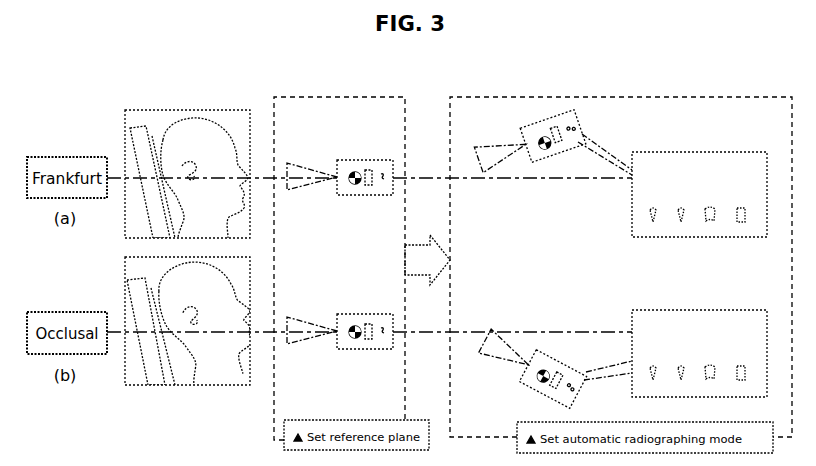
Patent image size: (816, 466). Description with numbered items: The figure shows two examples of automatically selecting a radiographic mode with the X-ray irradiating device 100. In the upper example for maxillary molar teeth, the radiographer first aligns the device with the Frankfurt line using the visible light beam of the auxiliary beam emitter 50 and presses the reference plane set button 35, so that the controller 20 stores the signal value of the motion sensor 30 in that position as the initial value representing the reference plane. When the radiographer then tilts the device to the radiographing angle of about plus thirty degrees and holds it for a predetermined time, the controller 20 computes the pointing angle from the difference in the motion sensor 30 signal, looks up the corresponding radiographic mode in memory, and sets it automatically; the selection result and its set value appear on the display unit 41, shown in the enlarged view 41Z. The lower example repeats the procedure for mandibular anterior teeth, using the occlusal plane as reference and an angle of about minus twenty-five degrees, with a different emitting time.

The X-ray irradiating device 100 is at (350, 160).
The auxiliary beam emitter 50 is at (337, 172).
The motion sensor 30 is at (355, 185).
The controller 20 is at (366, 187).
The reference plane set button 35 is at (383, 182).
The display unit 41 is at (567, 132).
The enlarged view 41Z is at (730, 152).